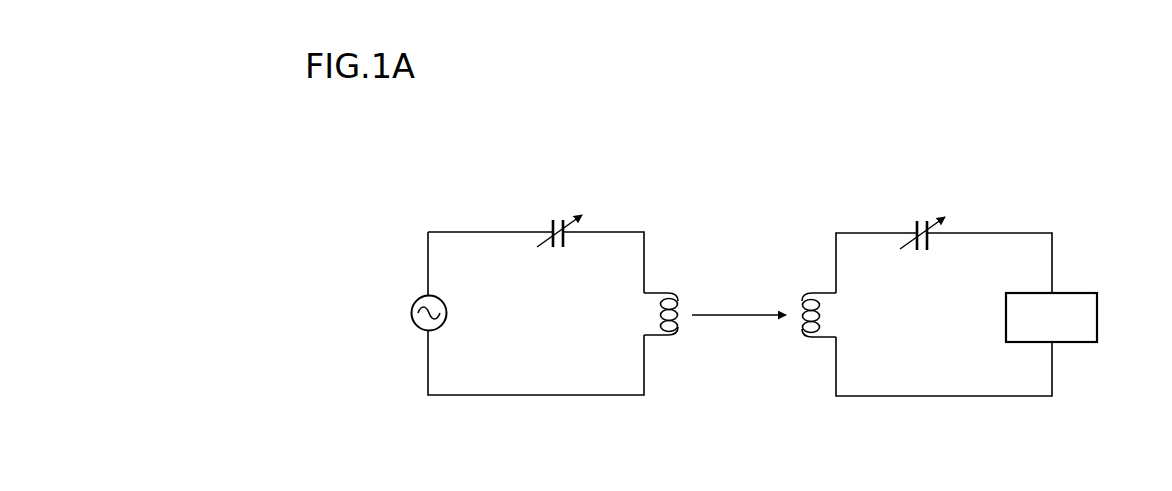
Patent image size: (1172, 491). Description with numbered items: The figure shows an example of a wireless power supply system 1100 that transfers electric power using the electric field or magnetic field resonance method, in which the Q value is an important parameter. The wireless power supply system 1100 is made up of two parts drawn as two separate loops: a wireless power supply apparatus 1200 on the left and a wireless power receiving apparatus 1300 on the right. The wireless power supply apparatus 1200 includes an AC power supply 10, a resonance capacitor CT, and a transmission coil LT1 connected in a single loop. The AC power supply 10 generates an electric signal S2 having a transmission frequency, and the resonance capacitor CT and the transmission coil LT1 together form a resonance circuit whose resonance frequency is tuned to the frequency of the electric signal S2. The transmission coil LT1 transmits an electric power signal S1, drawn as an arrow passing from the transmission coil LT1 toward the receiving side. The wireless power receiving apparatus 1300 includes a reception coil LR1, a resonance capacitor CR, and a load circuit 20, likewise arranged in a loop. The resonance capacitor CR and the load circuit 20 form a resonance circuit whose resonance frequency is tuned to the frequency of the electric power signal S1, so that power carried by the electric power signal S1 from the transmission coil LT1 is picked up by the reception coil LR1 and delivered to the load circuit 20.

The AC power supply 10 is at (413, 323).
The load circuit 20 is at (1099, 326).
The wireless power supply system 1100 is at (768, 454).
The wireless power supply apparatus 1200 is at (559, 152).
The wireless power receiving apparatus 1300 is at (921, 152).
The electric power signal S1 is at (739, 327).
The electric signal S2 is at (448, 281).
The resonance capacitor CT is at (556, 214).
The resonance capacitor CR is at (920, 217).
The transmission coil LT1 is at (666, 288).
The reception coil LR1 is at (811, 289).